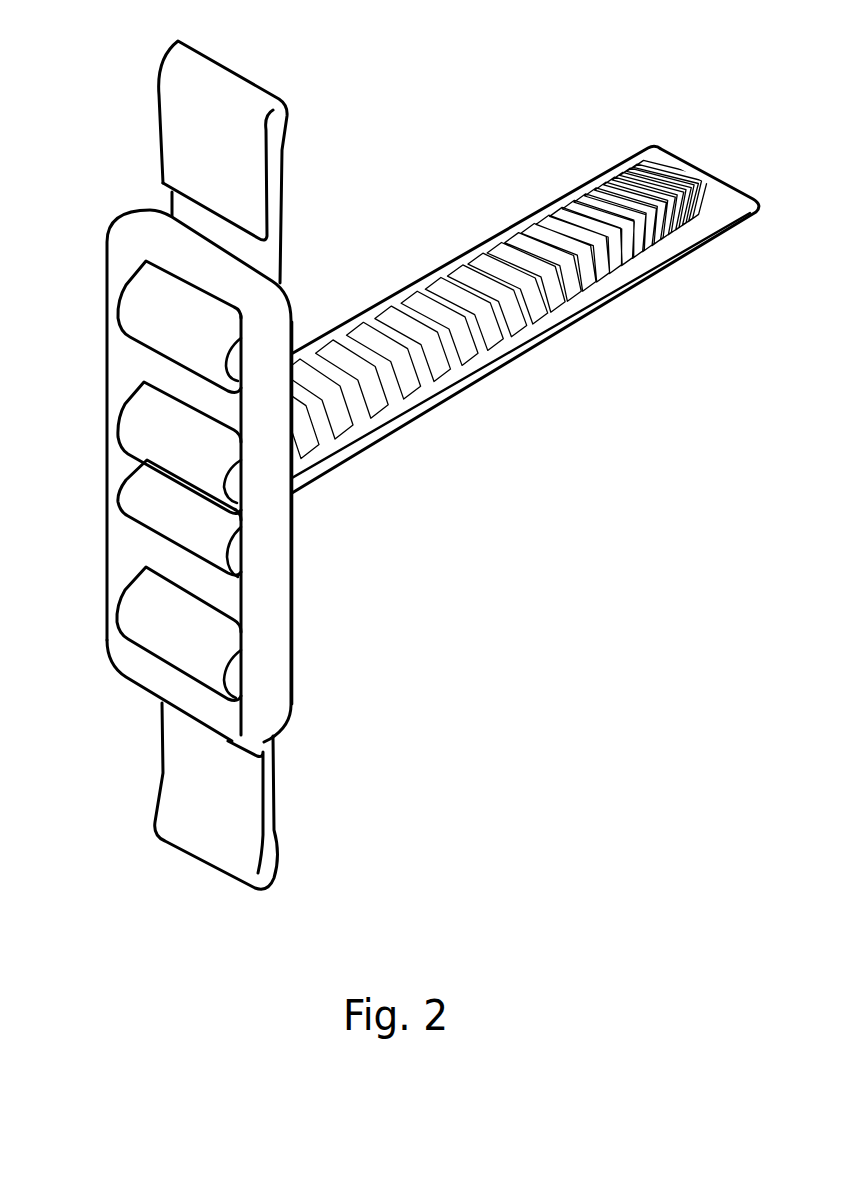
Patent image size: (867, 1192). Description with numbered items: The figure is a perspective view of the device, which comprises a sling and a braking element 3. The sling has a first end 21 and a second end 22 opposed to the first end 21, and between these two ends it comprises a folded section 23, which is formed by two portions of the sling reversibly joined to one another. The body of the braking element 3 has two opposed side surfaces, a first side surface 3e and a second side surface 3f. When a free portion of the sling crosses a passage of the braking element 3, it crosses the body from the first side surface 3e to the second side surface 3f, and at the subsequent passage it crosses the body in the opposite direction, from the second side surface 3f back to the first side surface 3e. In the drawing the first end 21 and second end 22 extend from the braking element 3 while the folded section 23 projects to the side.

The braking element 3 is at (211, 476).
The first side surface 3e is at (113, 368).
The second side surface 3f is at (285, 545).
The first end 21 is at (232, 105).
The second end 22 is at (273, 860).
The folded section 23 is at (588, 312).